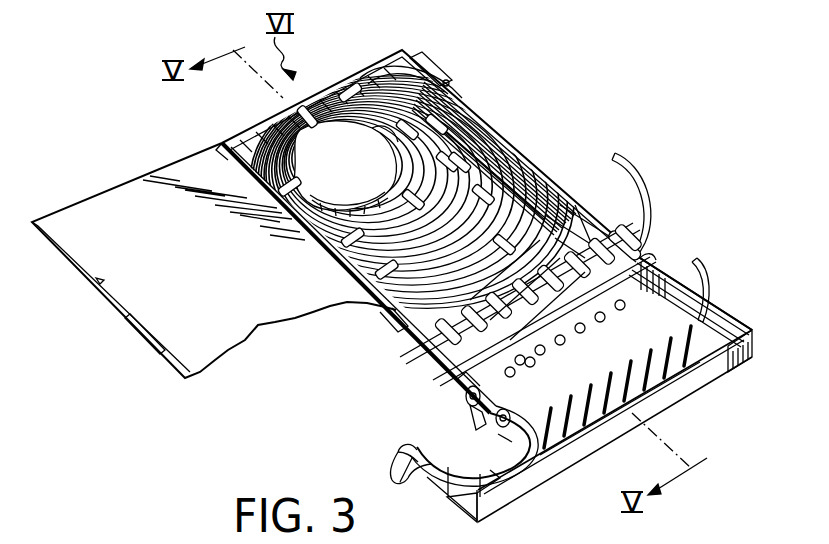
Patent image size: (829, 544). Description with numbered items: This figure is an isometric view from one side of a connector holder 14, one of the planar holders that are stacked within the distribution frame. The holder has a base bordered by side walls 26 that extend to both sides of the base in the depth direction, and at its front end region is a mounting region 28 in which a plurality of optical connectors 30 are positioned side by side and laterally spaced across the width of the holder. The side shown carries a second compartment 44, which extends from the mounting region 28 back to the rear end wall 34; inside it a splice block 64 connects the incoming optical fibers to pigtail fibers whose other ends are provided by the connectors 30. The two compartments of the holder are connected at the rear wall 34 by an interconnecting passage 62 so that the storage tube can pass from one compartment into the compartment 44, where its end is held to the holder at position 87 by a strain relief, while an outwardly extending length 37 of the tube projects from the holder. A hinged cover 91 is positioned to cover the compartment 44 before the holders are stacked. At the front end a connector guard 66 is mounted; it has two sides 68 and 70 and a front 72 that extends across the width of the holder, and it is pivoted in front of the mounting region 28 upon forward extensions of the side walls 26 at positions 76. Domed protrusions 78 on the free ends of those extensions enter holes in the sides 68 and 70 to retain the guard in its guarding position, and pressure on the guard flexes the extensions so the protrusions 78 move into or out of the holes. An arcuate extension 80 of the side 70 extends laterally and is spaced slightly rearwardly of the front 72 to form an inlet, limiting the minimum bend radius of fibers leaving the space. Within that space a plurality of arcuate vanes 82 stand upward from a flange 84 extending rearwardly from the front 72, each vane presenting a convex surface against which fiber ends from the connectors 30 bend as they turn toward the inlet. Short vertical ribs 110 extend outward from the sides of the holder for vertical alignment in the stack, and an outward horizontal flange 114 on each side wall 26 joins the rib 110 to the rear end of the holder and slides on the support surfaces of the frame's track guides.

The holder 14 is at (535, 153).
The side walls 26 is at (465, 98).
The mounting region 28 is at (652, 247).
The optical connectors 30 is at (535, 350).
The rear end wall 34 is at (398, 60).
The outwardly extending length 37 is at (648, 172).
The second compartment 44 is at (586, 206).
The interconnecting passage 62 is at (316, 96).
The splice block 64 is at (490, 120).
The connector guard 66 is at (666, 406).
The side of guard 68 is at (700, 276).
The side of guard 70 is at (504, 472).
The front of guard 72 is at (738, 374).
The pivot positions 76 is at (470, 412).
The domed protrusions 78 is at (508, 434).
The arcuate extension 80 is at (414, 444).
The arcuate vanes 82 is at (668, 335).
The flange 84 is at (722, 306).
The strain relief position 87 is at (432, 68).
The hinged cover 91 is at (203, 285).
The vertical ribs 110 is at (664, 256).
The horizontal flange 114 is at (382, 322).